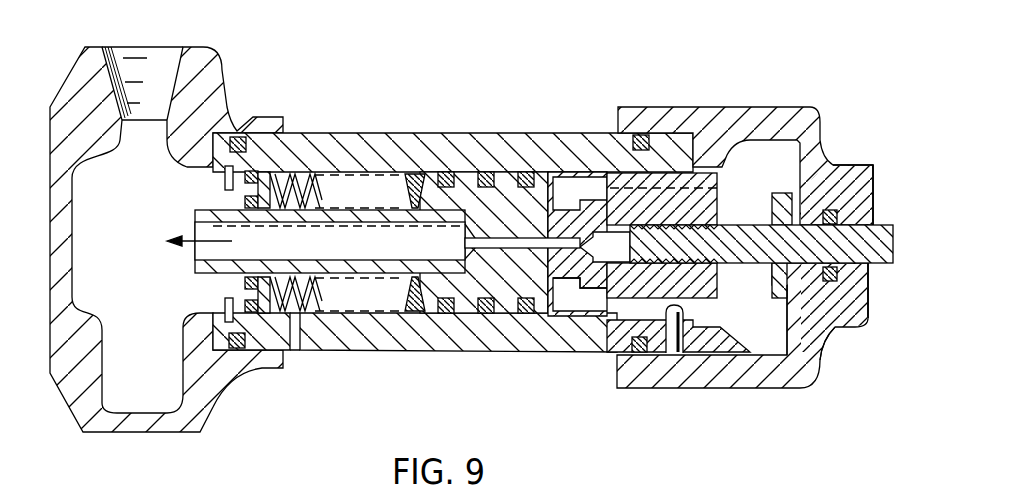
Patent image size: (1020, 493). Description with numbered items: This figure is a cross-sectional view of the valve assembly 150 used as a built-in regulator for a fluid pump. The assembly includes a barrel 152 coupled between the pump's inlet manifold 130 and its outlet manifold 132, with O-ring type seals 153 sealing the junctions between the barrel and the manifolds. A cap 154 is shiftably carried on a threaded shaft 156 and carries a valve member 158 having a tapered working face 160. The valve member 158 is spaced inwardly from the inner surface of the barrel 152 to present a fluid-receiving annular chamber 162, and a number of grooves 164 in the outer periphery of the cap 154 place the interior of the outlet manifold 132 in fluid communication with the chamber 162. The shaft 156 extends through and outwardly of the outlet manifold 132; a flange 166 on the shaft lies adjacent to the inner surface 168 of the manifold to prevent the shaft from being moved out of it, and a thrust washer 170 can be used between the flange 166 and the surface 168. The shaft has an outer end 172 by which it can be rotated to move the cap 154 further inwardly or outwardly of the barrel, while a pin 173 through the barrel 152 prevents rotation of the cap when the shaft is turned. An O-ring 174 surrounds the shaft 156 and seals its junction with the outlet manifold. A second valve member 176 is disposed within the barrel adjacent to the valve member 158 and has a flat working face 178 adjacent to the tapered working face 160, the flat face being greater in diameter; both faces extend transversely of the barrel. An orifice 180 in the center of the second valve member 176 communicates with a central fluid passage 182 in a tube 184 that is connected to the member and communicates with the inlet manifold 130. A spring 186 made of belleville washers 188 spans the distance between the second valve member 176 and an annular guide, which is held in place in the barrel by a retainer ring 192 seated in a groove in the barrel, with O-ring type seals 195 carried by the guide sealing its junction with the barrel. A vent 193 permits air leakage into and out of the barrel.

The inlet manifold 130 is at (148, 418).
The outlet manifold 132 is at (782, 108).
The valve assembly 150 is at (709, 80).
The barrel 152 is at (442, 138).
The O-ring type seals 153 is at (240, 135).
The cap 154 is at (722, 207).
The threaded shaft 156 is at (752, 265).
The valve member 158 is at (573, 200).
The tapered working face 160 is at (555, 292).
The annular chamber 162 is at (600, 300).
The grooves 164 is at (715, 182).
The flange 166 is at (780, 303).
The inner surface 168 is at (790, 345).
The thrust washer 170 is at (800, 200).
The outer end 172 is at (882, 227).
The pin 173 is at (683, 338).
The O-ring 174 is at (833, 282).
The second valve member 176 is at (500, 176).
The flat working face 178 is at (562, 172).
The orifice 180 is at (237, 282).
The central fluid passage 182 is at (205, 252).
The tube 184 is at (200, 209).
The spring 186 is at (329, 180).
The belleville washers 188 is at (412, 176).
The retainer ring 192 is at (225, 303).
The vent 193 is at (293, 350).
The O-ring type seals 195 is at (245, 200).